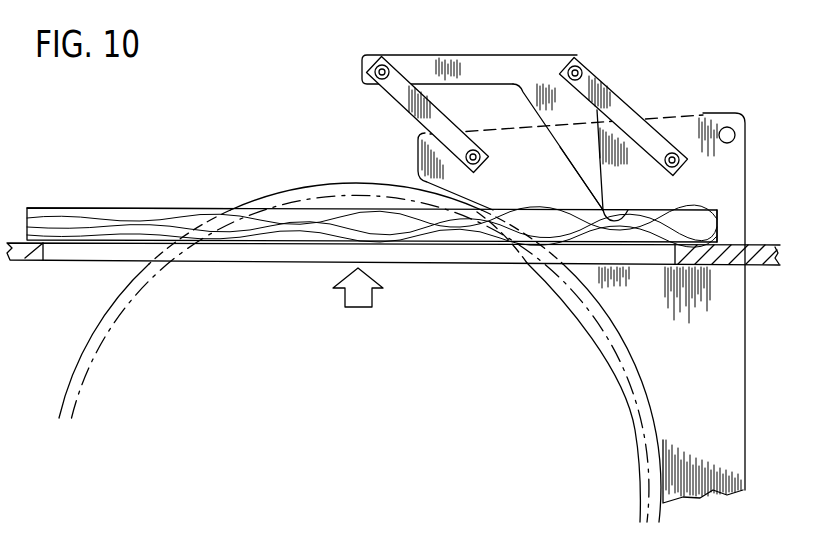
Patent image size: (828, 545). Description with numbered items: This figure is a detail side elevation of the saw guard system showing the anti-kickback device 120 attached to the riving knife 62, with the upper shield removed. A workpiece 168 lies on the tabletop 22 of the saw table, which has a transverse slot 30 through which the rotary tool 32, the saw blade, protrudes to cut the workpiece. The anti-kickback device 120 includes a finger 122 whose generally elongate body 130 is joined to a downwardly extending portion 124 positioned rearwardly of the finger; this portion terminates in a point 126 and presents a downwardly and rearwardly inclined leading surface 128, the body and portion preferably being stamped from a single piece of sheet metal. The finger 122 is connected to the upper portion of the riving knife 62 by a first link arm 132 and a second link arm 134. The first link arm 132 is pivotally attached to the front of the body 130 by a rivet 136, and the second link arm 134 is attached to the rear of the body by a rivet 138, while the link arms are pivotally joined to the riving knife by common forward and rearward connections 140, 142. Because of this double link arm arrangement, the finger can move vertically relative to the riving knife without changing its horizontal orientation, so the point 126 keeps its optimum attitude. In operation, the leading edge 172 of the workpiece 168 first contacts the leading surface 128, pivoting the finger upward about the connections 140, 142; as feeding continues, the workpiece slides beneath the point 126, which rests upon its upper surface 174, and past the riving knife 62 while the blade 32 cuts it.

The tabletop 22 is at (258, 264).
The transverse slot 30 is at (676, 246).
The rotary tool 32 is at (278, 192).
The riving knife 62 is at (733, 168).
The anti-kickback device 120 is at (540, 119).
The finger 122 is at (477, 60).
The downwardly extending portion 124 is at (587, 147).
The point 126 is at (632, 212).
The leading surface 128 is at (582, 182).
The body 130 is at (524, 95).
The first link arm 132 is at (400, 100).
The second link arm 134 is at (612, 115).
The rivet 136 is at (373, 72).
The rivet 138 is at (580, 57).
The forward connection 140 is at (468, 146).
The rearward connection 142 is at (678, 147).
The workpiece 168 is at (379, 202).
The leading edge 172 is at (727, 228).
The upper surface 174 is at (125, 208).